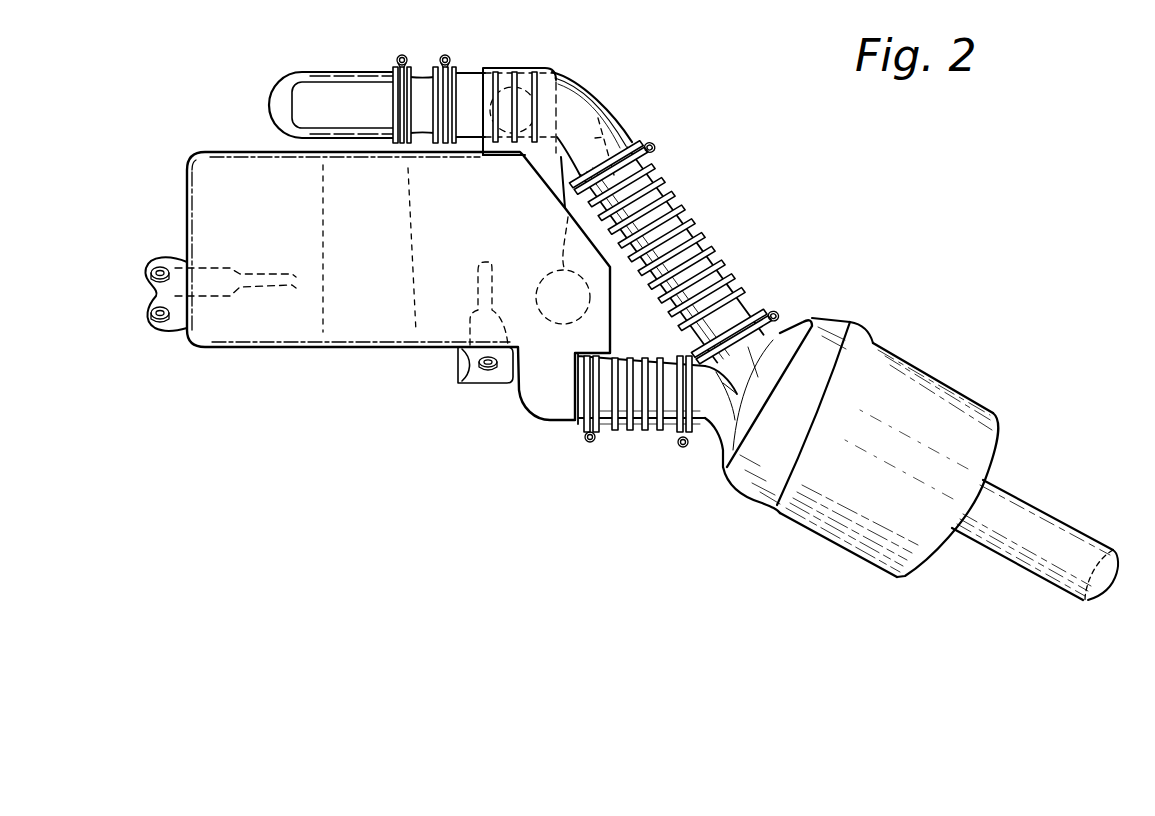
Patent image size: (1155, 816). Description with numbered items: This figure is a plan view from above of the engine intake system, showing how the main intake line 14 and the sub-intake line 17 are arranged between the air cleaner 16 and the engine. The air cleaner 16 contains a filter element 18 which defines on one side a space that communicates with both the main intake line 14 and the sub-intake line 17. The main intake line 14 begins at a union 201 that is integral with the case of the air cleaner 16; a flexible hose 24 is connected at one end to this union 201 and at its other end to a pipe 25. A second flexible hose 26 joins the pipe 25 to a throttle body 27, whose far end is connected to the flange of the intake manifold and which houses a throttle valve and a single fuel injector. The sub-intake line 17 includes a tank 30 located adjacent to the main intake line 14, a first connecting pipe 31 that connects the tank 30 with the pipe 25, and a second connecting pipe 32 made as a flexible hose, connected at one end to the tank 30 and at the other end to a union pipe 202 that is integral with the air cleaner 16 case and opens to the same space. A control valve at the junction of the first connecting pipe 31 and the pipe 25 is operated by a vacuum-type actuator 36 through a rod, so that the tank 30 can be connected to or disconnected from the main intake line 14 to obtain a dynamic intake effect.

The main intake line 14 is at (674, 216).
The air cleaner 16 is at (838, 538).
The sub-intake line 17 is at (581, 446).
The filter element 18 is at (1043, 577).
The flexible hose 24 is at (733, 284).
The pipe 25 is at (598, 108).
The flexible hose 26 is at (422, 77).
The throttle body 27 is at (347, 72).
The tank 30 is at (330, 333).
The first connecting pipe 31 is at (631, 124).
The second connecting pipe 32 is at (640, 437).
The actuator 36 is at (546, 68).
The union 201 is at (755, 355).
The union pipe 202 is at (712, 430).